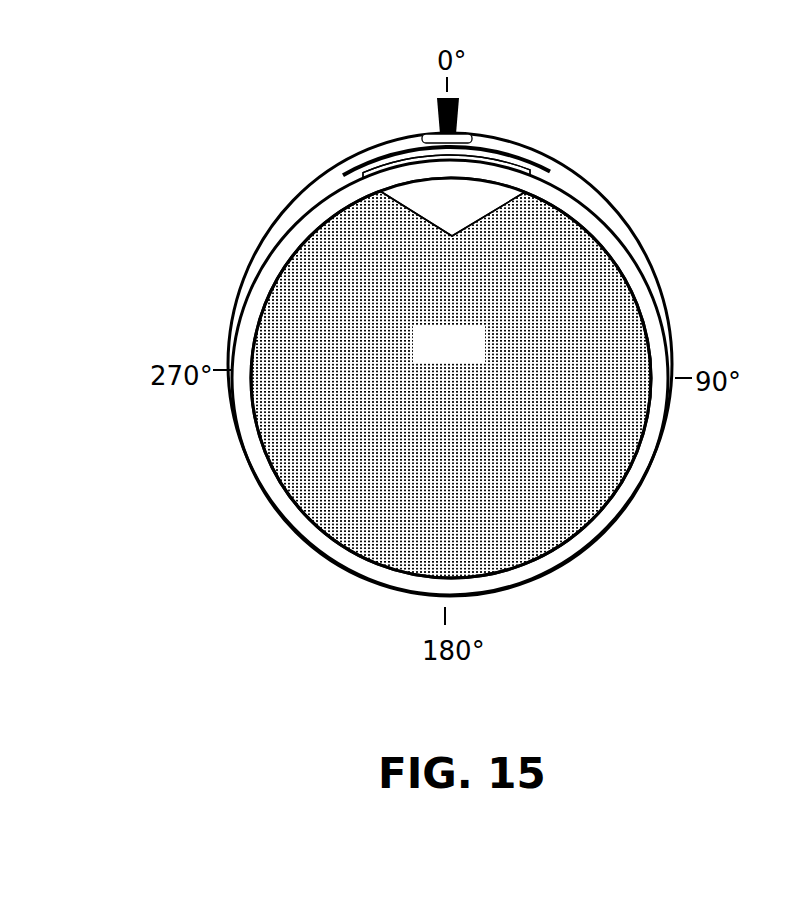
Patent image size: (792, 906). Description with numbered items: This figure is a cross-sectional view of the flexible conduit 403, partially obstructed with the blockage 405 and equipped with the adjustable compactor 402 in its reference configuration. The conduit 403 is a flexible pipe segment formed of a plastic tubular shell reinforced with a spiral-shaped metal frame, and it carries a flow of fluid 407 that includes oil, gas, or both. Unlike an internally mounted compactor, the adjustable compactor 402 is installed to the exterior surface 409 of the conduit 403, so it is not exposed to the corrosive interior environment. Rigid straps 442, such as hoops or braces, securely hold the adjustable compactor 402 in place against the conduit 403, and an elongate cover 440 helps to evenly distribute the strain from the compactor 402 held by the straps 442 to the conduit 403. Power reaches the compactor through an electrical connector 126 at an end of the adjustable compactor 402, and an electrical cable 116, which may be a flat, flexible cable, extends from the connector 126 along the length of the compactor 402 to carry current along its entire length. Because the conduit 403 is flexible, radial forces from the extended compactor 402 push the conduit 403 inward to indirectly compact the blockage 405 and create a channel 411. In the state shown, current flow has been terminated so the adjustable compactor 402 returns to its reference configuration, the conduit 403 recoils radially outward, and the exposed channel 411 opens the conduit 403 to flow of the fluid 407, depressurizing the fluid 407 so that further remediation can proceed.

The electrical cable 116 is at (462, 133).
The electrical connector 126 is at (437, 107).
The adjustable compactor 402 is at (362, 165).
The flexible conduit 403 is at (612, 221).
The blockage 405 is at (428, 356).
The fluid 407 is at (488, 218).
The exterior surface 409 is at (446, 166).
The channel 411 is at (452, 213).
The elongate cover 440 is at (541, 160).
The rigid straps 442 is at (242, 281).